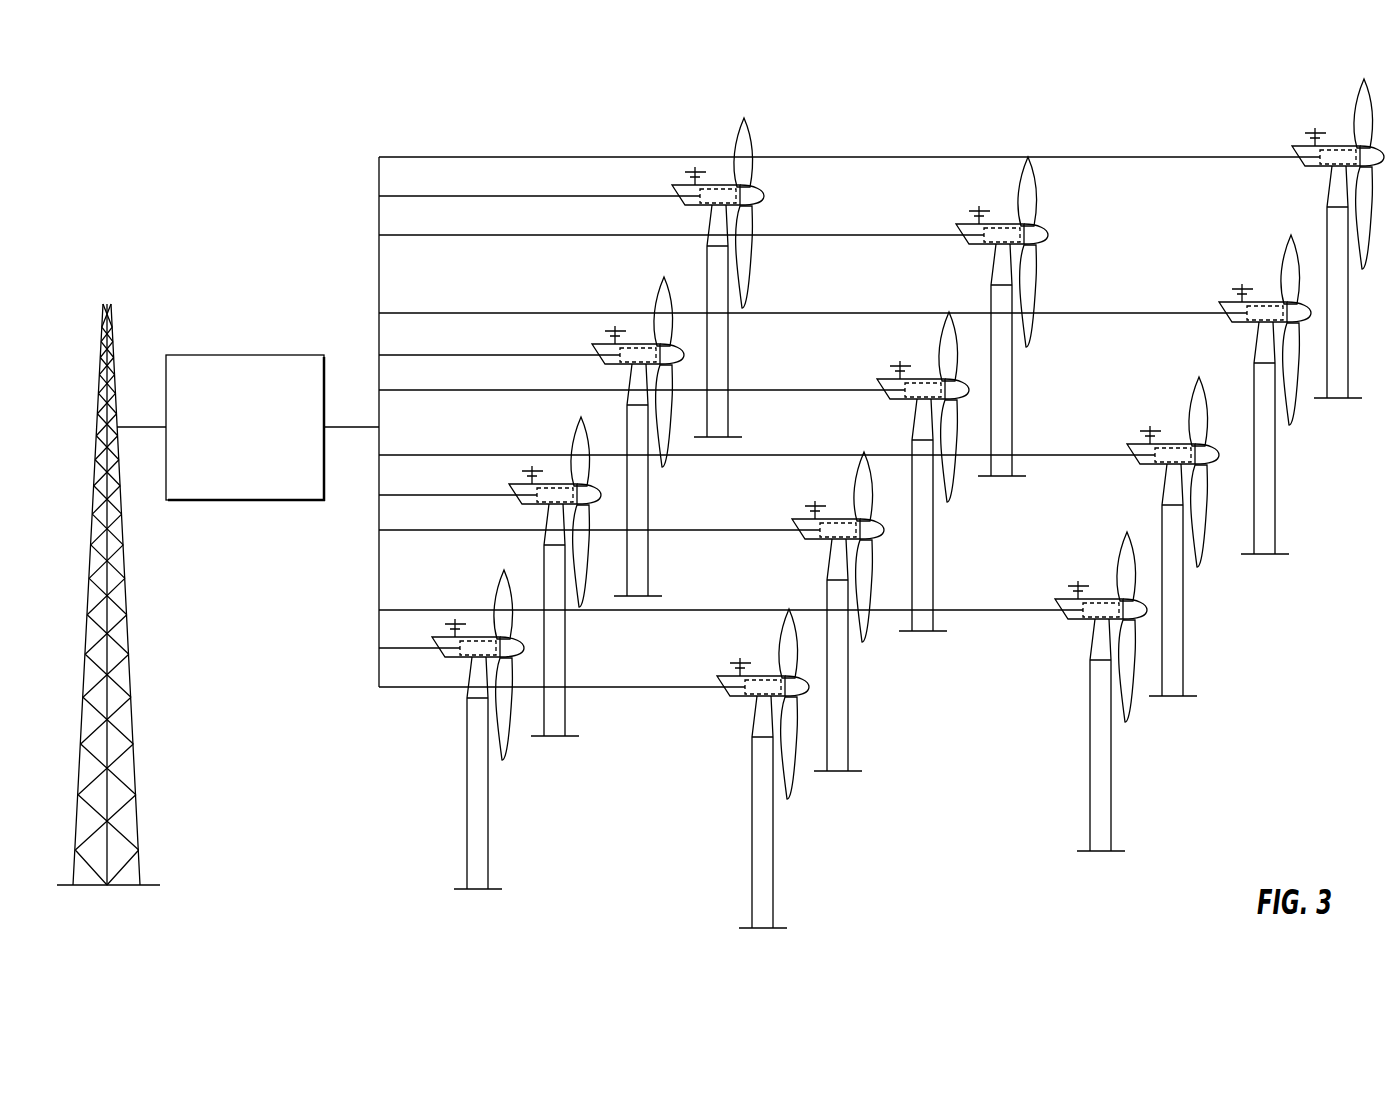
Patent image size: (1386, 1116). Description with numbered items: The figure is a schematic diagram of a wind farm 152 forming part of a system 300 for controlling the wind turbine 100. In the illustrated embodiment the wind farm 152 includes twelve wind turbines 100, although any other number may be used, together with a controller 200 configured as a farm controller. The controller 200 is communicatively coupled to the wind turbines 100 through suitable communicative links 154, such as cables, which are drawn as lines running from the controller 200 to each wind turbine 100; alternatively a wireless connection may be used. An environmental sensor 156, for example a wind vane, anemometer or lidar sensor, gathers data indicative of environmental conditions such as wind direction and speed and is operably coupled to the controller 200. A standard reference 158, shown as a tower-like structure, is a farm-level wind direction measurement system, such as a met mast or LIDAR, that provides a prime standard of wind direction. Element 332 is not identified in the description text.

The wind turbine 100 is at (570, 672).
The wind farm 152 is at (299, 205).
The communicative link 154 is at (538, 312).
The environmental sensor 156 is at (717, 668).
The standard reference 158 is at (160, 574).
The controller 200 is at (259, 366).
The system 300 is at (720, 491).
The cluster of wind turbines 332 is at (697, 131).